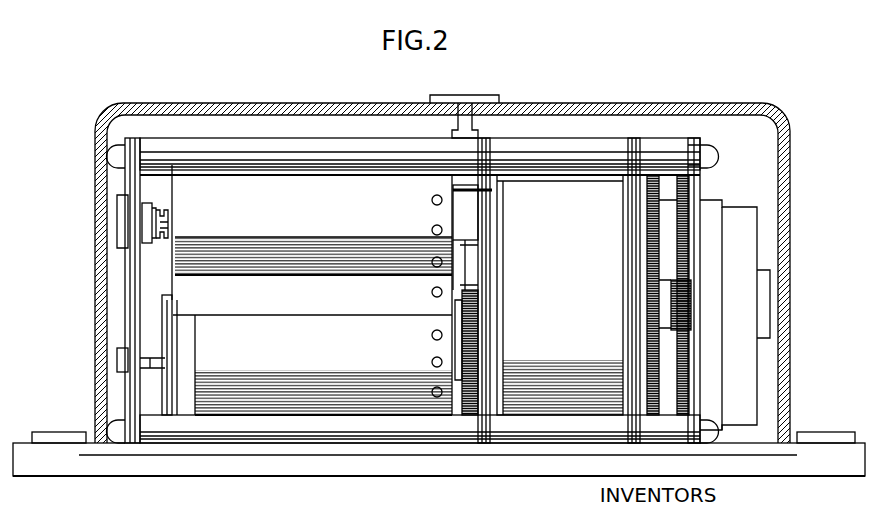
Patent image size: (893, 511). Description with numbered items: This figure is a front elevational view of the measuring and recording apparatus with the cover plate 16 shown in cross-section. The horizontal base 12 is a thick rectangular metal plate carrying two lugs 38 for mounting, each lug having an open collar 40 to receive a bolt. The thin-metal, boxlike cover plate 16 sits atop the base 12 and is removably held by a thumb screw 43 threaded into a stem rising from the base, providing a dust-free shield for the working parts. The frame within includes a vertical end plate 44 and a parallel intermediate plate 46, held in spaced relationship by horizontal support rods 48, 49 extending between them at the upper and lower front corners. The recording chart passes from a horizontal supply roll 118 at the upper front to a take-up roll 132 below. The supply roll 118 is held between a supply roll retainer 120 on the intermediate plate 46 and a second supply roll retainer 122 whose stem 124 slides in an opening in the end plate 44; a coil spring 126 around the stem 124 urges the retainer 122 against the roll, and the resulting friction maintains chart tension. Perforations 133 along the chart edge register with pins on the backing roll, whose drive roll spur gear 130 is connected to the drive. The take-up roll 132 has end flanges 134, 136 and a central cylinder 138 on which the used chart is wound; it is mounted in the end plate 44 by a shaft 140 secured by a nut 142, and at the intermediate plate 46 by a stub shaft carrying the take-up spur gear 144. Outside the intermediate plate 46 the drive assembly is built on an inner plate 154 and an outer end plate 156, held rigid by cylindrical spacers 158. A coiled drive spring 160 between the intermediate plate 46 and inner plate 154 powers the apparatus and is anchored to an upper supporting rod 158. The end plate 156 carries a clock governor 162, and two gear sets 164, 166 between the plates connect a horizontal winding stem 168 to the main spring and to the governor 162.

The base 12 is at (403, 470).
The cover plate 16 is at (348, 105).
The lugs 38 is at (46, 460).
The open collar 40 is at (43, 437).
The thumb screw 43 is at (465, 100).
The end plate 44 is at (138, 142).
The intermediate plate 46 is at (485, 146).
The horizontal support rod 48 is at (268, 150).
The horizontal support rod 49 is at (210, 430).
The supply roll 118 is at (311, 212).
The supply roll retainer 120 is at (468, 218).
The second supply roll retainer 122 is at (168, 250).
The stem 124 is at (160, 207).
The coil spring 126 is at (168, 224).
The drive roll spur gear 130 is at (490, 190).
The take-up roll 132 is at (311, 352).
The perforations 133 is at (431, 362).
The end flange 134 is at (172, 303).
The end flange 136 is at (456, 303).
The central cylinder 138 is at (178, 346).
The shaft 140 is at (170, 360).
The nut 142 is at (118, 360).
The take-up spur gear 144 is at (475, 352).
The inner plate 154 is at (635, 150).
The end plate 156 is at (702, 143).
The cylindrical spacers 158 is at (555, 160).
The coiled drive spring 160 is at (569, 289).
The clock governor 162 is at (737, 210).
The gear set 164 is at (652, 272).
The gear set 166 is at (683, 240).
The winding stem 168 is at (765, 302).